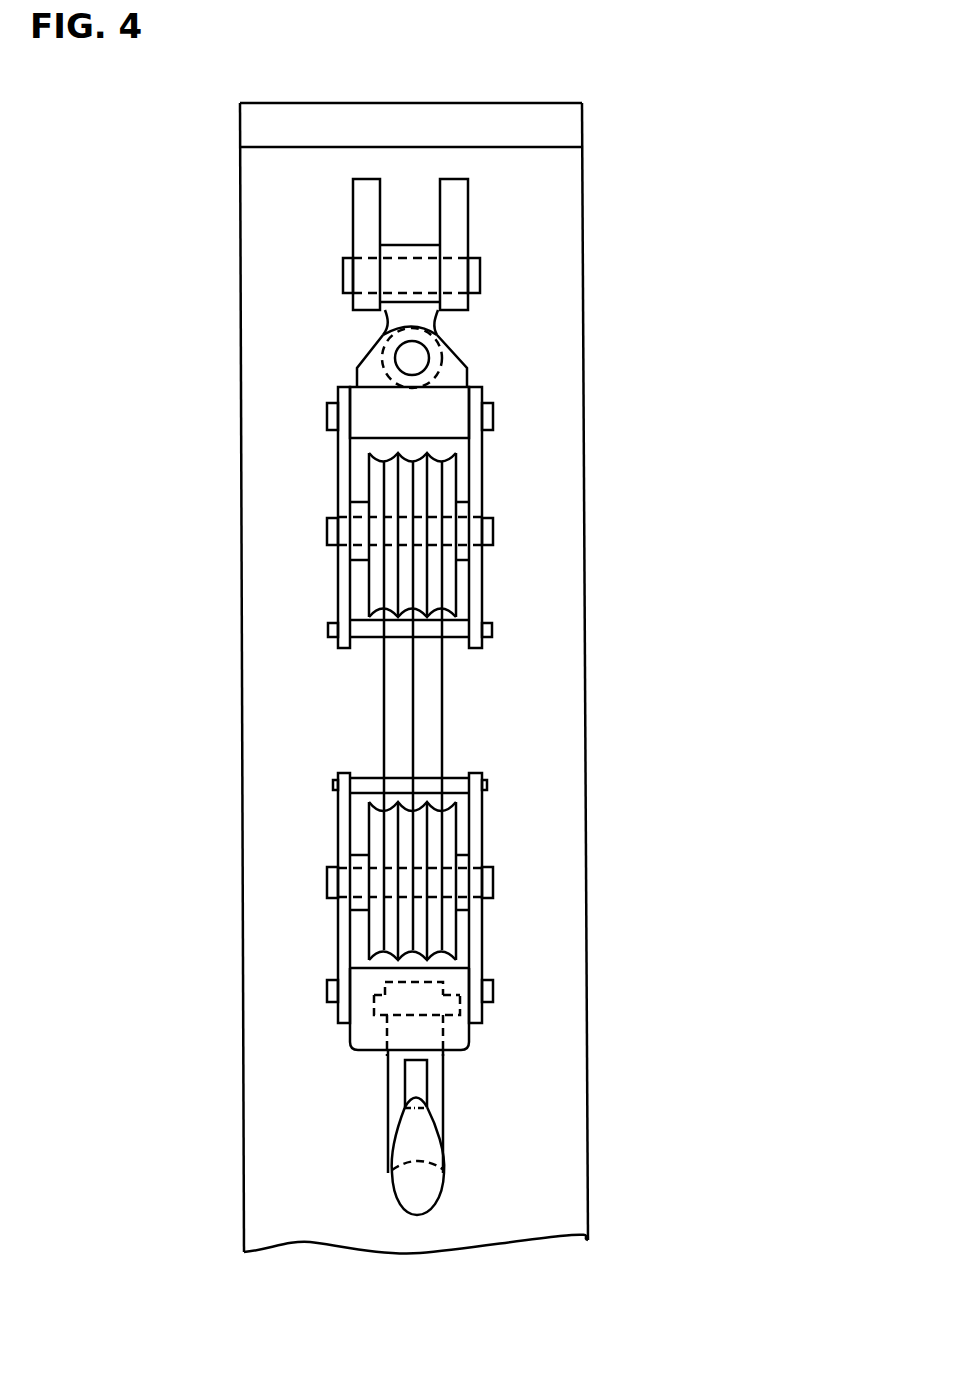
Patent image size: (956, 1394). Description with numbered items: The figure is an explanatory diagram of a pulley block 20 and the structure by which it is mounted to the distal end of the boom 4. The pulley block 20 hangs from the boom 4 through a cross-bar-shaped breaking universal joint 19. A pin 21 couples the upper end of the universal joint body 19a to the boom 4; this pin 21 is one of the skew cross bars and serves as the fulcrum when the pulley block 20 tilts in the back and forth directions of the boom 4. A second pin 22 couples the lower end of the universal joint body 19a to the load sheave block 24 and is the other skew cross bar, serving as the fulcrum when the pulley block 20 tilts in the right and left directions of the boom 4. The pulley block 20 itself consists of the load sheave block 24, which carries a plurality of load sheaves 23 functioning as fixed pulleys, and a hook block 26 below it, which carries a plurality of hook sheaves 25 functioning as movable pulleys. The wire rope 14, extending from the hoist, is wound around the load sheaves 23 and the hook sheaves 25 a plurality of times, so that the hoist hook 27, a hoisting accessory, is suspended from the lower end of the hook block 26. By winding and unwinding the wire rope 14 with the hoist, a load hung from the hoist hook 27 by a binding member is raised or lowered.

The boom 4 is at (582, 130).
The wire rope 14 is at (445, 715).
The universal joint 19 is at (416, 289).
The universal joint body 19a is at (393, 319).
The pulley block 20 is at (535, 597).
The pin 21 is at (343, 278).
The pin 22 is at (407, 355).
The load sheaves 23 is at (370, 587).
The load sheave block 24 is at (325, 517).
The hook sheaves 25 is at (370, 933).
The hook block 26 is at (320, 914).
The hoist hook 27 is at (383, 1126).